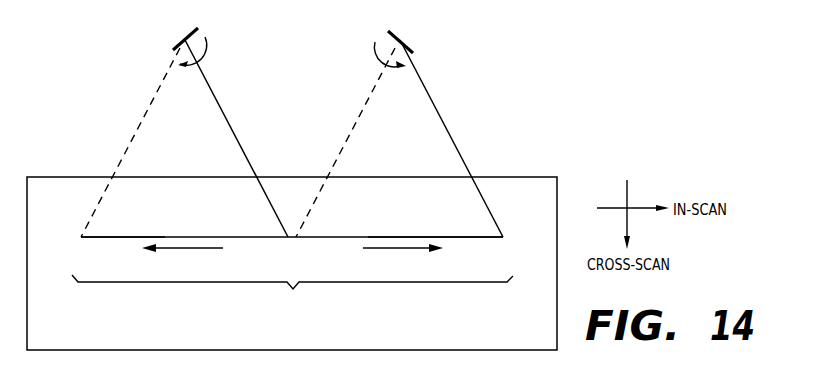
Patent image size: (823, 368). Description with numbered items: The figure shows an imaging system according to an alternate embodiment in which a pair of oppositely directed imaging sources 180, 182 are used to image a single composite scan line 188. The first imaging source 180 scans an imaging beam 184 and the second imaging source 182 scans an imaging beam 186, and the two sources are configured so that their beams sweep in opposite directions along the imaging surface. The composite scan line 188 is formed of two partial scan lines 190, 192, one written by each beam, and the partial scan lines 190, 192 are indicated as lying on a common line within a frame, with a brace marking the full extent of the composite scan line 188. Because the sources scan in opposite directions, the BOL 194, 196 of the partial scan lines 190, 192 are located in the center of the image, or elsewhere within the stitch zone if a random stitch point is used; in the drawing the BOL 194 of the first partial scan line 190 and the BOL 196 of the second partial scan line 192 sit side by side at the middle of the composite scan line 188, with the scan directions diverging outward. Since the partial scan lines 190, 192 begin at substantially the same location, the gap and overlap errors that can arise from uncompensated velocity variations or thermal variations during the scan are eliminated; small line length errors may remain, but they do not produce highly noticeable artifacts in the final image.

The imaging source 180 is at (173, 34).
The imaging source 182 is at (413, 35).
The imaging beam 184 is at (222, 108).
The imaging beam 186 is at (437, 108).
The composite scan line 188 is at (292, 296).
The partial scan line 190 is at (165, 237).
The partial scan line 192 is at (368, 237).
The BOL 194 is at (287, 237).
The BOL 196 is at (297, 237).